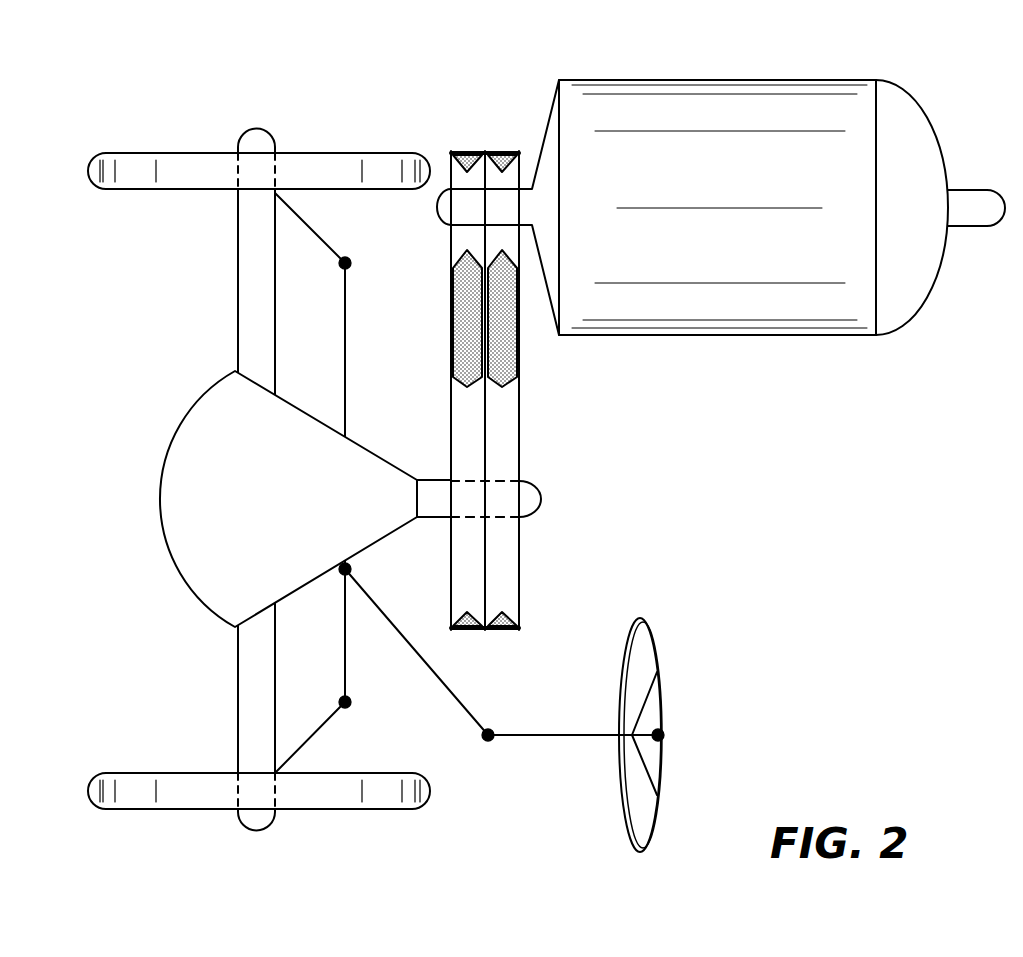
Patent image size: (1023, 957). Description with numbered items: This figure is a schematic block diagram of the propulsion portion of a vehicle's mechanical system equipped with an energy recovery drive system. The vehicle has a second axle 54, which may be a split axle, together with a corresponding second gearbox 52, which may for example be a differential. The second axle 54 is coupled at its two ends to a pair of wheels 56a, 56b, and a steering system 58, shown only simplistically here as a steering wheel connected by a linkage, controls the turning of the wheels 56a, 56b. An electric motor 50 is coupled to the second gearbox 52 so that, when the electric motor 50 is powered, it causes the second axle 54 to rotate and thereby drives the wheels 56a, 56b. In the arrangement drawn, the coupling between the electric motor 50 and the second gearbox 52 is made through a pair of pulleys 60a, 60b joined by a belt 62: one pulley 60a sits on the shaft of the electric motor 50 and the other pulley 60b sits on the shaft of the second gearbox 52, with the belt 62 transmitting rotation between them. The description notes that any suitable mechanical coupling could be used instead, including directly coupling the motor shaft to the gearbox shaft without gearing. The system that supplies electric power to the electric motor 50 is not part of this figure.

The electric motor 50 is at (823, 337).
The second gearbox 52 is at (195, 575).
The second axle 54 is at (250, 676).
The wheel 56a is at (182, 793).
The wheel 56b is at (185, 158).
The steering system 58 is at (530, 736).
The pulley 60a is at (458, 175).
The pulley 60b is at (512, 552).
The belt 62 is at (513, 359).